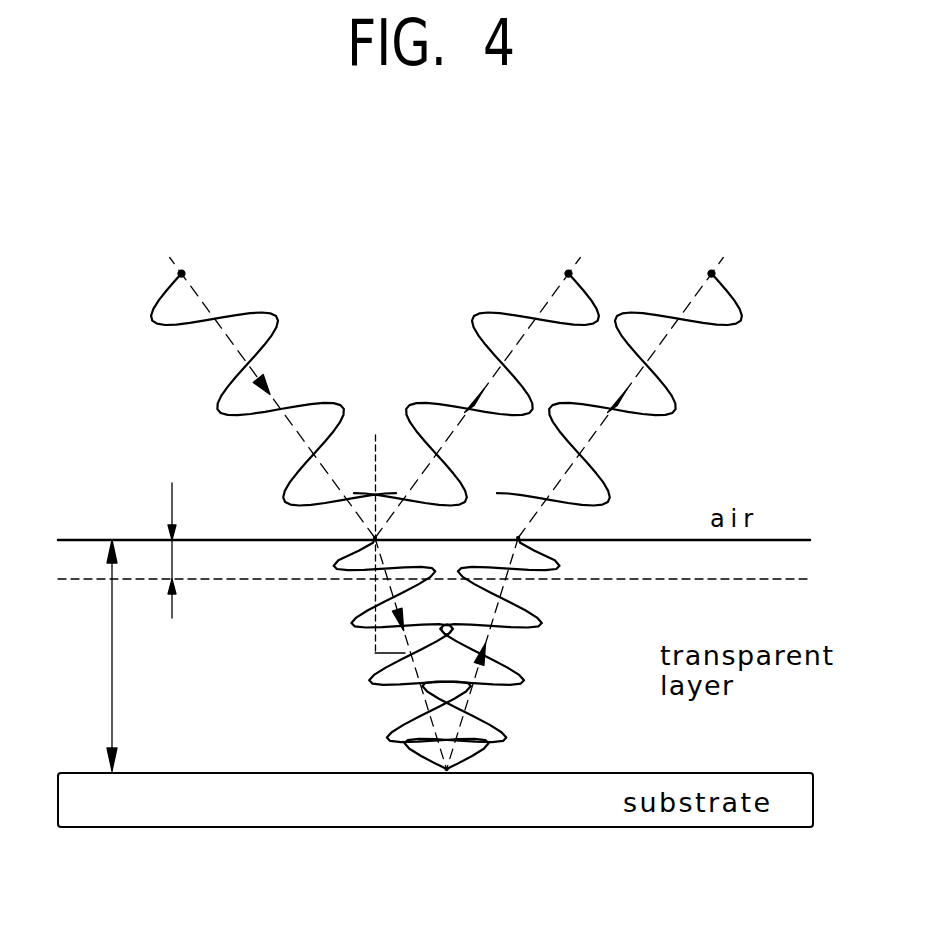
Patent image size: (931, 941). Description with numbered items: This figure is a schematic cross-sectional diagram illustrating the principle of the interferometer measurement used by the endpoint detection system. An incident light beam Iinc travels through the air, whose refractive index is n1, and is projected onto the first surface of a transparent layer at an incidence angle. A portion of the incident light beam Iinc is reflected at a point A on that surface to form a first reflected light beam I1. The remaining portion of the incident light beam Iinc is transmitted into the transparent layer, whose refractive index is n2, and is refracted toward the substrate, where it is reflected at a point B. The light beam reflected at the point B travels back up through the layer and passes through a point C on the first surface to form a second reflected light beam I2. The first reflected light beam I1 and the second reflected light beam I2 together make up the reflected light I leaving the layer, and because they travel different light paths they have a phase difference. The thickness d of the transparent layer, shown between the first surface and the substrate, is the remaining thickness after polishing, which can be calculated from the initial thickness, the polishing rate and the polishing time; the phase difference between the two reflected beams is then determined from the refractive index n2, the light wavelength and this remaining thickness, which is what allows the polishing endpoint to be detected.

The incident light beam Iinc is at (273, 394).
The first reflected light beam I1 is at (476, 394).
The second reflected light beam I2 is at (619, 394).
The reflected light (I1 and I2) I is at (723, 237).
The point A is at (409, 637).
The point B is at (412, 766).
The point C is at (482, 626).
The refractive index of air n1 is at (420, 516).
The refractive index n2 is at (420, 602).
The remaining thickness d is at (95, 655).